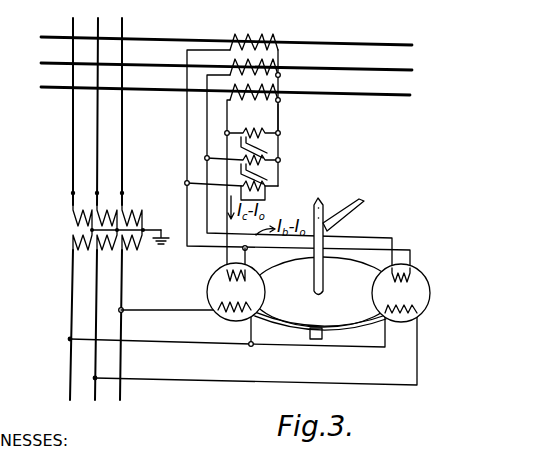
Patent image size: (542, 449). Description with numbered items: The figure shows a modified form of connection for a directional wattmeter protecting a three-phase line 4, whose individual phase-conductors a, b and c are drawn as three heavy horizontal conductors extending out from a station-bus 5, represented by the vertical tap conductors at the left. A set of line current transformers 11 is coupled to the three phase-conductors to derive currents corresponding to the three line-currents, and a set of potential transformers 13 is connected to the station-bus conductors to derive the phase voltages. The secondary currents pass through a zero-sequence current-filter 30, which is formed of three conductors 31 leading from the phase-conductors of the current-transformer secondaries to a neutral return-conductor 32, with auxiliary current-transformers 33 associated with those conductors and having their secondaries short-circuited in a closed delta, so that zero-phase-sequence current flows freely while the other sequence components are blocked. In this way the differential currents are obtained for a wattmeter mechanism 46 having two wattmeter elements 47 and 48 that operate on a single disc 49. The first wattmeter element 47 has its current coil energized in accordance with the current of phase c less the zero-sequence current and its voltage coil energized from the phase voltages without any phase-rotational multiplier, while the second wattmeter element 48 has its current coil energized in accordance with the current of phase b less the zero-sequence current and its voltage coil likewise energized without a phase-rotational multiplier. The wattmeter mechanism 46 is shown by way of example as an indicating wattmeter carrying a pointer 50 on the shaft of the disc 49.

The protected three-phase line 4 is at (325, 92).
The phase-conductor a is at (412, 45).
The phase-conductor b is at (412, 70).
The phase-conductor c is at (410, 95).
The station-bus 5 is at (122, 148).
The line current transformers 11 is at (258, 35).
The potential transformers 13 is at (133, 212).
The zero-sequence current-filter 30 is at (318, 148).
The conductors 31 is at (186, 180).
The neutral return-conductor 32 is at (282, 116).
The auxiliary current-transformers 33 is at (281, 161).
The wattmeter mechanism 46 is at (411, 232).
The first wattmeter element 47 is at (207, 287).
The second wattmeter element 48 is at (431, 293).
The disc 49 is at (341, 321).
The pointer 50 is at (364, 200).